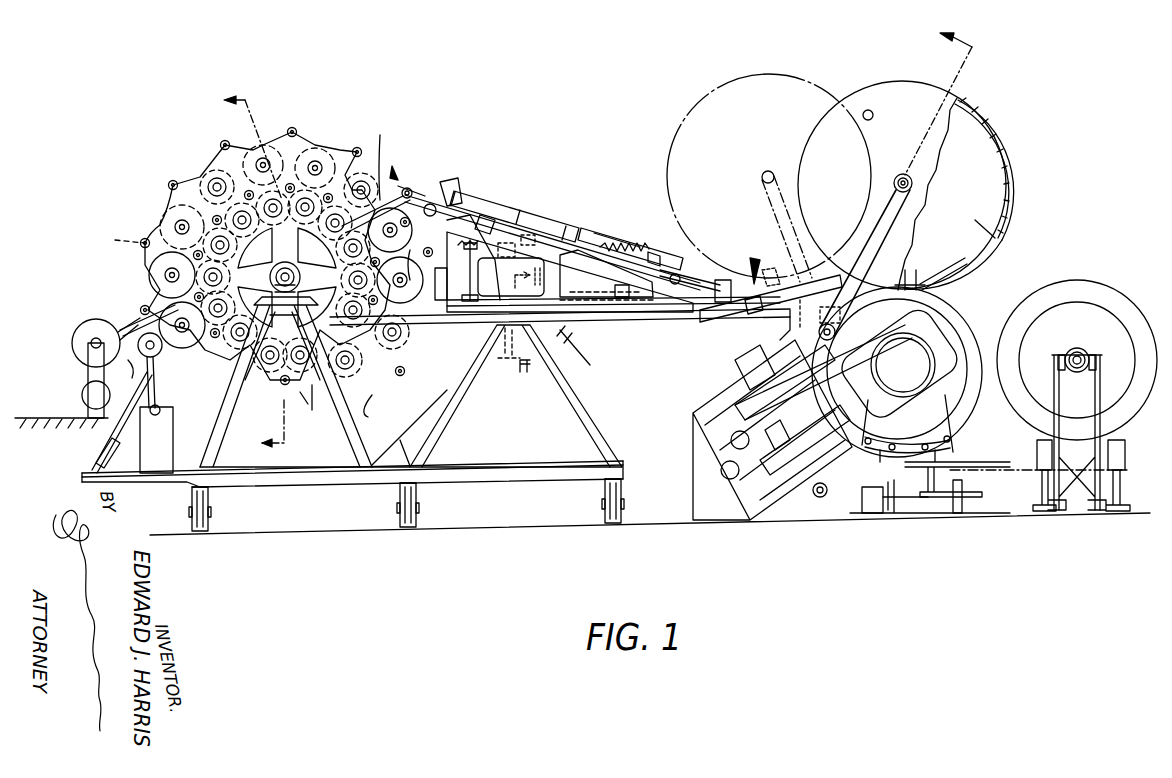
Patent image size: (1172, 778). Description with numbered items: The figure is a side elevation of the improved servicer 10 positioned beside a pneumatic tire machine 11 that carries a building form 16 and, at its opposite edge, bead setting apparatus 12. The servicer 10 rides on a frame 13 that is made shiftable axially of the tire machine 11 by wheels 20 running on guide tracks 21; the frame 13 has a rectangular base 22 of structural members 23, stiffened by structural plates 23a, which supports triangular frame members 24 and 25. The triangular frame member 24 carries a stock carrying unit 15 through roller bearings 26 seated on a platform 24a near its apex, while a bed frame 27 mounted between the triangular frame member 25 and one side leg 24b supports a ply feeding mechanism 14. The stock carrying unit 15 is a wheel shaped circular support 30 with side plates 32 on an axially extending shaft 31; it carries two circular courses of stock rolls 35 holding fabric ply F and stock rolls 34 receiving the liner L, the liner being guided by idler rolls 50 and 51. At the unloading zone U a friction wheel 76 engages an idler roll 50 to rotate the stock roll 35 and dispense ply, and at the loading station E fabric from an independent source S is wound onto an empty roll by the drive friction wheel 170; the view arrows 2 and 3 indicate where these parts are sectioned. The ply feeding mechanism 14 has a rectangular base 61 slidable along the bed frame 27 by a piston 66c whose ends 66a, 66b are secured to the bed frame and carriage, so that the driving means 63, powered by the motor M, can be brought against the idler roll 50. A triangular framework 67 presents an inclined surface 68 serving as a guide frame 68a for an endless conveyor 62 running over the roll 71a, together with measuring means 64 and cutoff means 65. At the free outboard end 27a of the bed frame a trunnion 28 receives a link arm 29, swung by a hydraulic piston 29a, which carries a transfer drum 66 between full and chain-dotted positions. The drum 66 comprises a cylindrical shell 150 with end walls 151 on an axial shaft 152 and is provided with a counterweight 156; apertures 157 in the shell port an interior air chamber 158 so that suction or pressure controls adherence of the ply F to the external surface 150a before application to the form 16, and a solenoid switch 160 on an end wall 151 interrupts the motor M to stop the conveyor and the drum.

The servicer 10 is at (460, 107).
The section line 2 is at (241, 145).
The side plate 32 is at (259, 158).
The stock carrying unit 15 is at (296, 143).
The idler rolls 50 is at (173, 184).
The wheel shaped circular support 30 is at (185, 193).
The idler rolls 51 is at (217, 216).
The stock rolls 35 is at (163, 213).
The stock rolls 34 is at (240, 179).
The drive friction wheel 170 is at (94, 318).
The independent source S is at (68, 330).
The loading station E is at (148, 307).
The fabric ply stock F is at (130, 310).
The liner L is at (132, 403).
The unloading zone U is at (388, 178).
The section line 3 is at (581, 225).
The friction wheel 76 is at (412, 192).
The ply feeding mechanism 14 is at (530, 200).
The driving means 63 is at (455, 228).
The triangular framework 67 is at (540, 238).
The cutoff means 65 is at (560, 219).
The inclined surface 68 is at (591, 223).
The guide frame 68a is at (600, 228).
The measuring means 64 is at (670, 237).
The transfer drum 66 is at (742, 92).
The solenoid switch 160 is at (868, 110).
The end walls 151 is at (895, 95).
The bead setting apparatus 12 is at (1115, 298).
The air chamber 158 is at (965, 150).
The apertures 157 is at (986, 162).
The cylindrical shell 150 is at (1008, 180).
The external surface 150a is at (998, 216).
The building form 16 is at (960, 318).
The link arm 29 is at (868, 212).
The hydraulic piston 29a is at (739, 262).
The endless conveyor 62 is at (718, 273).
The roll 71a is at (744, 279).
The axial shaft 152 is at (912, 180).
The counterweight 156 is at (910, 282).
The piston end 66b is at (658, 254).
The piston end 66a is at (607, 275).
The piston 66c is at (639, 288).
The rectangular base 61 is at (566, 252).
The motor M is at (427, 275).
The bed frame 27 is at (642, 308).
The free outboard end 27a is at (761, 318).
The trunnion 28 is at (782, 330).
The roller bearings 26 is at (278, 264).
The axially extending shaft 31 is at (295, 274).
The platform 24a is at (358, 283).
The triangular frame member 24 is at (286, 382).
The structural members 23 is at (348, 467).
The side leg 24b is at (357, 401).
The structural plates 23a is at (386, 438).
The triangular frame member 25 is at (480, 371).
The frame 13 is at (466, 395).
The rectangular base 22 is at (490, 467).
The wheels 20 is at (212, 523).
The guide tracks 21 is at (187, 523).
The pneumatic tire machine 11 is at (965, 405).